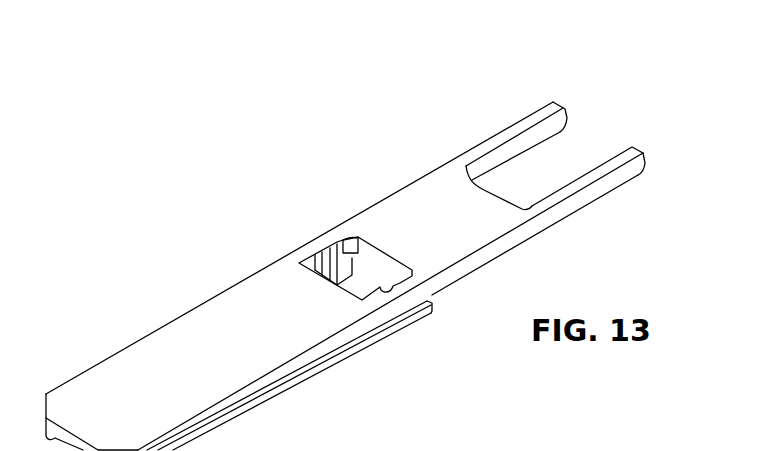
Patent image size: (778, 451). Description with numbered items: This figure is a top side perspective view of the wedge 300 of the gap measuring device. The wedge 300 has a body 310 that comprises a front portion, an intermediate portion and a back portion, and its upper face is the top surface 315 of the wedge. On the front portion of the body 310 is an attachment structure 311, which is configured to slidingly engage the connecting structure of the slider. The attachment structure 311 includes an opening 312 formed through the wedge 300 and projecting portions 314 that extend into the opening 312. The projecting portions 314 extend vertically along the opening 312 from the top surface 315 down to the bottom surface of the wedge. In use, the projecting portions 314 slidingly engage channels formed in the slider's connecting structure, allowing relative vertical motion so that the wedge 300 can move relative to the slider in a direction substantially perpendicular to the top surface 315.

The wedge 300 is at (345, 228).
The body 310 is at (106, 388).
The attachment structure 311 is at (326, 294).
The opening 312 is at (362, 278).
The projecting portions 314 is at (335, 255).
The top surface 315 is at (185, 345).